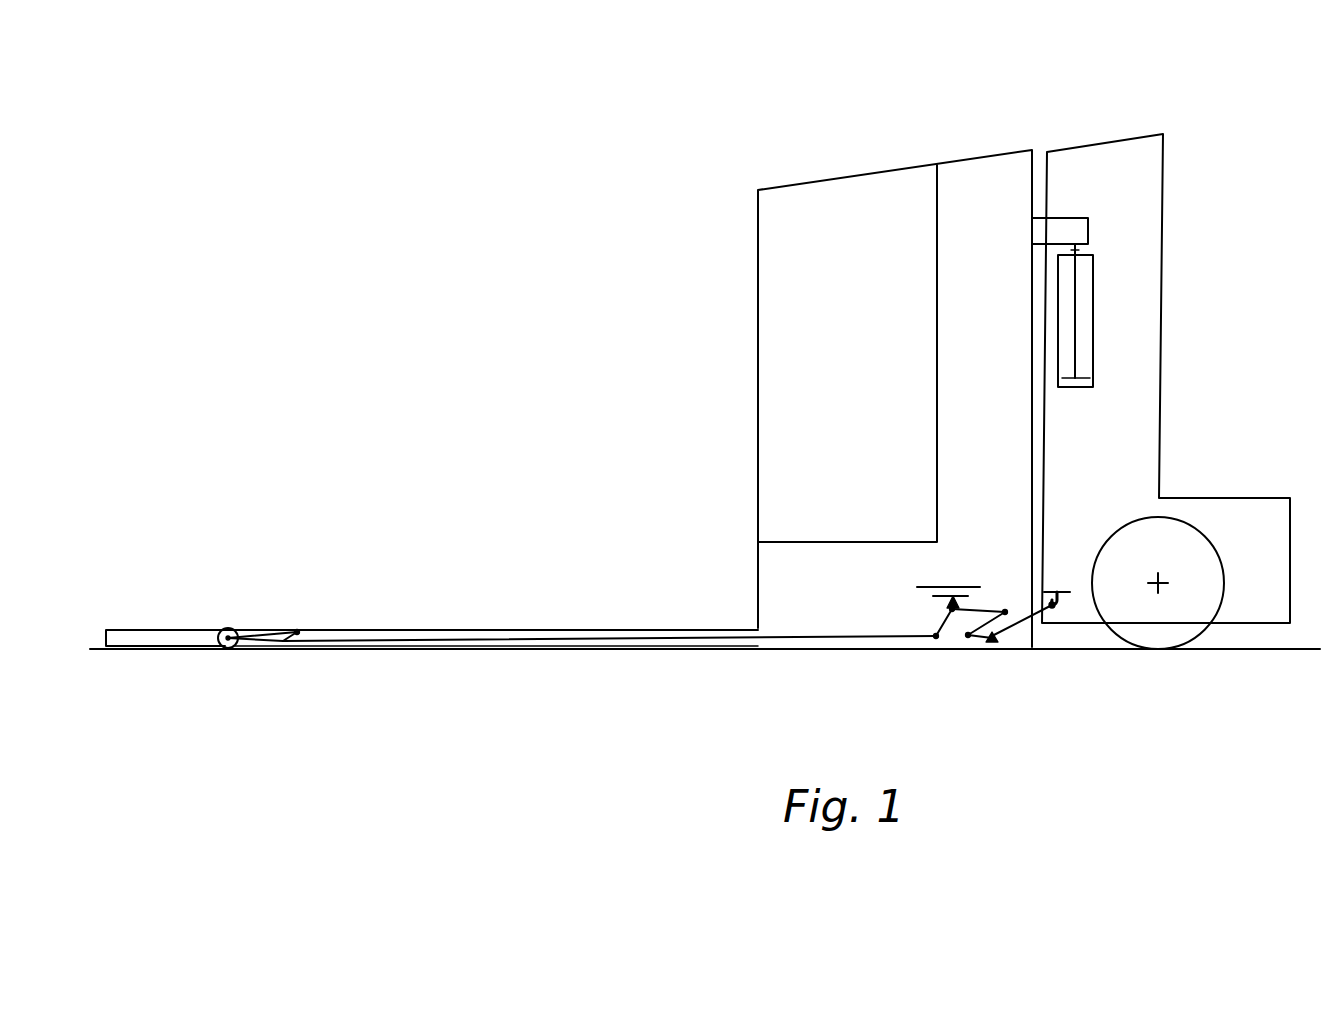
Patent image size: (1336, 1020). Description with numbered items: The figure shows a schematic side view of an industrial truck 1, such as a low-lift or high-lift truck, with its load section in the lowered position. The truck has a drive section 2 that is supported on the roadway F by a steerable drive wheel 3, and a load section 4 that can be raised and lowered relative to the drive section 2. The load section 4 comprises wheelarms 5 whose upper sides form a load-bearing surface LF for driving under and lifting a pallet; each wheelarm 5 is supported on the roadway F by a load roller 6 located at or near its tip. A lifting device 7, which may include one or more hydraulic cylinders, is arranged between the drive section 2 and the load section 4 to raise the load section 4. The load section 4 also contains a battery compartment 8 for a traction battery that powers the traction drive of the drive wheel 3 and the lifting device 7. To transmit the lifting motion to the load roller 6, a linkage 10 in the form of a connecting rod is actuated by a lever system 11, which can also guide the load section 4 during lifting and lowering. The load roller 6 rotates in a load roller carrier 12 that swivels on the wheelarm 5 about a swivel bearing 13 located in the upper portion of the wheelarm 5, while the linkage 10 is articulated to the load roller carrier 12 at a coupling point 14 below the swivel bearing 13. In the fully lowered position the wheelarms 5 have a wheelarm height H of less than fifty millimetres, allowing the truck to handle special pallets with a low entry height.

The industrial truck 1 is at (410, 176).
The drive section 2 is at (1140, 442).
The drive wheel 3 is at (1172, 632).
The load section 4 is at (984, 176).
The wheelarm 5 is at (547, 627).
The load roller 6 is at (228, 648).
The lifting device 7 is at (1090, 311).
The battery compartment 8 is at (810, 518).
The linkage 10 is at (790, 630).
The lever system 11 is at (1017, 640).
The load roller carrier 12 is at (266, 630).
The swivel bearing 13 is at (300, 627).
The coupling point 14 is at (283, 643).
The wheelarm height H is at (165, 743).
The load-bearing surface LF is at (467, 618).
The roadway F is at (1246, 648).